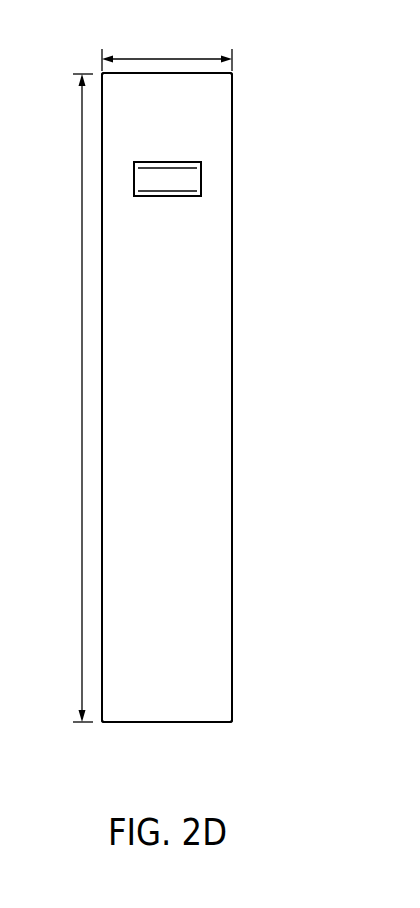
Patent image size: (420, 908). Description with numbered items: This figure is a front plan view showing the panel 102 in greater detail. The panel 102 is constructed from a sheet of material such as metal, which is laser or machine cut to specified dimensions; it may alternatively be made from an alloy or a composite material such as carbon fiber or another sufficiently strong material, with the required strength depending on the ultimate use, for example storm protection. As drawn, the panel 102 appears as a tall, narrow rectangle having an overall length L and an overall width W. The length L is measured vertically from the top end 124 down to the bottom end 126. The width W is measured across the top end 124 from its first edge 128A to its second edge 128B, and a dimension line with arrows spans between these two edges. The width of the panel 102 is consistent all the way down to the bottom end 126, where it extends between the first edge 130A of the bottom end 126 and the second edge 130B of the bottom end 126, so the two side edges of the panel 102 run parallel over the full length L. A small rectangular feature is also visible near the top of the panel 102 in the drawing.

The panel 102 is at (182, 392).
The top end 124 is at (195, 72).
The bottom end 126 is at (133, 740).
The first edge of the top end 128A is at (90, 58).
The second edge of the top end 128B is at (250, 56).
The first edge of the bottom end 130A is at (92, 727).
The second edge of the bottom end 130B is at (242, 727).
The overall width W is at (162, 58).
The overall length L is at (82, 374).